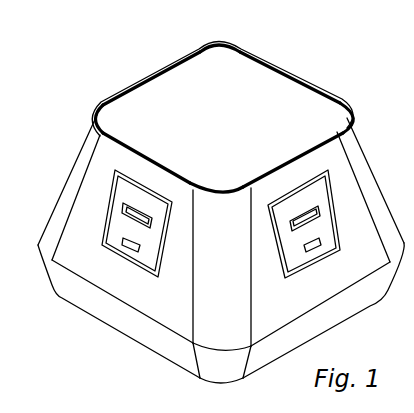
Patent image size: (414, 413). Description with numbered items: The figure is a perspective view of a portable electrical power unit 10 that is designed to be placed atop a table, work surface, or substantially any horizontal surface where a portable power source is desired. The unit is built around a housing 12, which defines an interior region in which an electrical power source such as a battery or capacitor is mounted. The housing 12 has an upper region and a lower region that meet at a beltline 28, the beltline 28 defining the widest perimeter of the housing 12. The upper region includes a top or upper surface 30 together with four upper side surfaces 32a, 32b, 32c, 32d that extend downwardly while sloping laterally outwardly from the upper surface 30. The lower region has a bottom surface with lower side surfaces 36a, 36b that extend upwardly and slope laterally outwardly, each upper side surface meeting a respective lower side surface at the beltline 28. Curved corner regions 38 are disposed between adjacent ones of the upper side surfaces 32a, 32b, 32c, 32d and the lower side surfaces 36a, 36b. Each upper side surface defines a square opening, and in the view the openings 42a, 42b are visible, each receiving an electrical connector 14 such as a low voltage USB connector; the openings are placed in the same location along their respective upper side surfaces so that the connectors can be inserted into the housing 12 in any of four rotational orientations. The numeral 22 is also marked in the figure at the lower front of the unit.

The portable electrical power unit 10 is at (367, 68).
The housing 12 is at (360, 133).
The electrical connector 14 is at (113, 210).
The front bottom corner 22 is at (200, 380).
The beltline 28 is at (147, 320).
The upper surface 30 is at (269, 78).
The upper side surface 32a is at (137, 166).
The upper side surface 32b is at (282, 170).
The upper side surface 32c is at (310, 83).
The upper side surface 32d is at (143, 78).
The lower side surface 36a is at (100, 307).
The lower side surface 36b is at (332, 312).
The curved corner region 38 is at (220, 44).
The square opening 42a is at (167, 257).
The square opening 42b is at (278, 264).